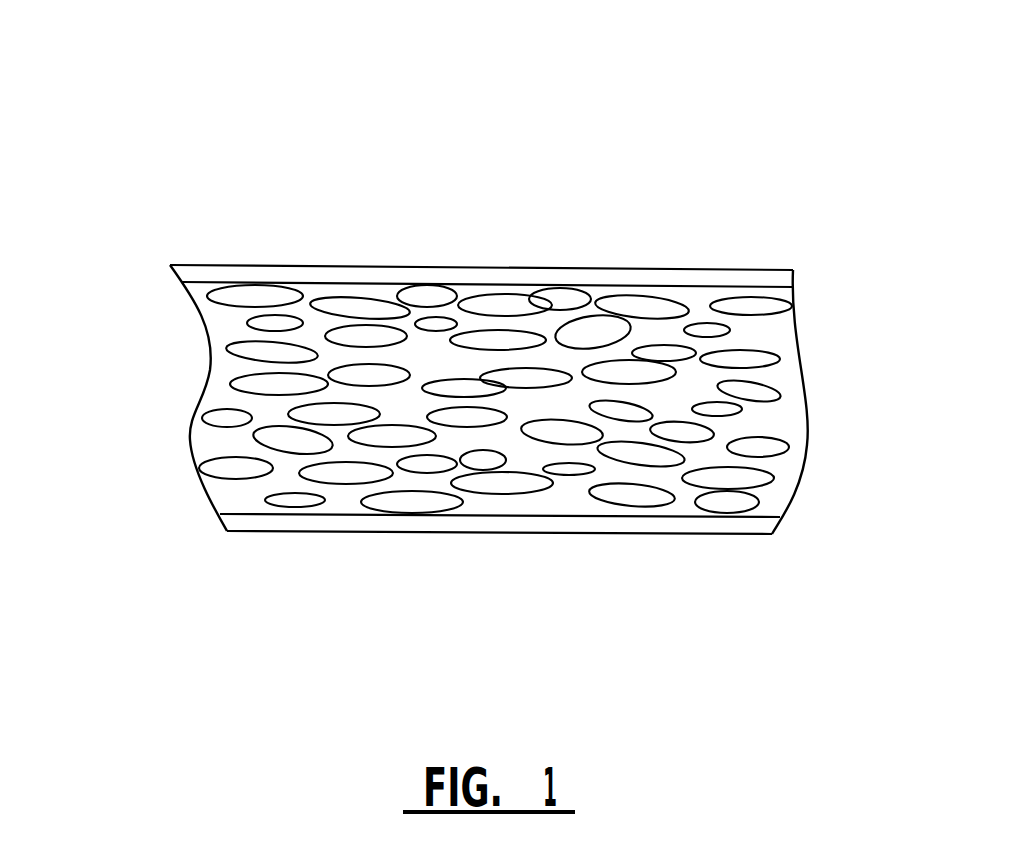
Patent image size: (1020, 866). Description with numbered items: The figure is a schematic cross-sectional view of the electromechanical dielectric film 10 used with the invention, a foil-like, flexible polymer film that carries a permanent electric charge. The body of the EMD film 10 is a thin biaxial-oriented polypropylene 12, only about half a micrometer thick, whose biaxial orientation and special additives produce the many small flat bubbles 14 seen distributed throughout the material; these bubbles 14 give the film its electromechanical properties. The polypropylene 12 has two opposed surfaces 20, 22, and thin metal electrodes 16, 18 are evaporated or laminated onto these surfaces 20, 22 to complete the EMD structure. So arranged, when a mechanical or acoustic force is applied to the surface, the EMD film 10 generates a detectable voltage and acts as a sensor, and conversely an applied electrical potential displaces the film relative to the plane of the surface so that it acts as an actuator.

The electromechanical dielectric (EMD) film 10 is at (421, 170).
The biaxial-oriented polypropylene 12 is at (220, 371).
The small flat bubbles 14 is at (223, 465).
The thin metal electrode 16 is at (566, 266).
The thin metal electrode 18 is at (337, 533).
The surface of the film 20 is at (300, 283).
The surface of the film 22 is at (540, 513).